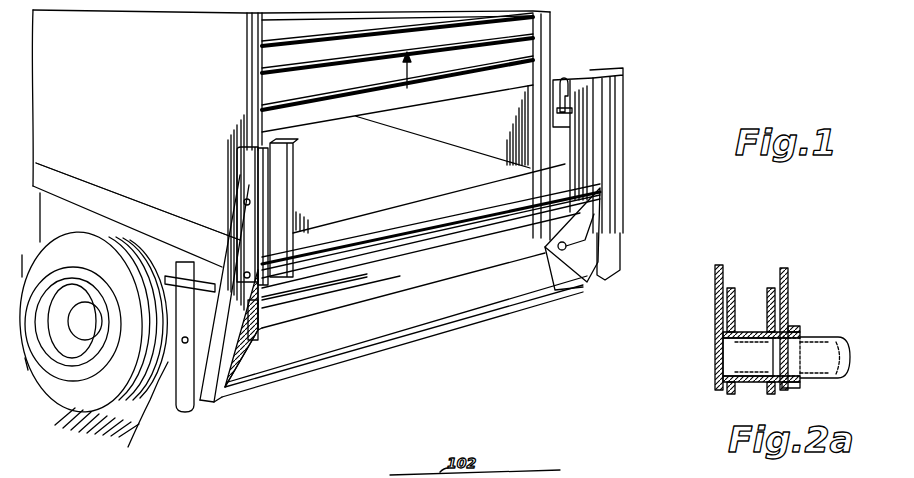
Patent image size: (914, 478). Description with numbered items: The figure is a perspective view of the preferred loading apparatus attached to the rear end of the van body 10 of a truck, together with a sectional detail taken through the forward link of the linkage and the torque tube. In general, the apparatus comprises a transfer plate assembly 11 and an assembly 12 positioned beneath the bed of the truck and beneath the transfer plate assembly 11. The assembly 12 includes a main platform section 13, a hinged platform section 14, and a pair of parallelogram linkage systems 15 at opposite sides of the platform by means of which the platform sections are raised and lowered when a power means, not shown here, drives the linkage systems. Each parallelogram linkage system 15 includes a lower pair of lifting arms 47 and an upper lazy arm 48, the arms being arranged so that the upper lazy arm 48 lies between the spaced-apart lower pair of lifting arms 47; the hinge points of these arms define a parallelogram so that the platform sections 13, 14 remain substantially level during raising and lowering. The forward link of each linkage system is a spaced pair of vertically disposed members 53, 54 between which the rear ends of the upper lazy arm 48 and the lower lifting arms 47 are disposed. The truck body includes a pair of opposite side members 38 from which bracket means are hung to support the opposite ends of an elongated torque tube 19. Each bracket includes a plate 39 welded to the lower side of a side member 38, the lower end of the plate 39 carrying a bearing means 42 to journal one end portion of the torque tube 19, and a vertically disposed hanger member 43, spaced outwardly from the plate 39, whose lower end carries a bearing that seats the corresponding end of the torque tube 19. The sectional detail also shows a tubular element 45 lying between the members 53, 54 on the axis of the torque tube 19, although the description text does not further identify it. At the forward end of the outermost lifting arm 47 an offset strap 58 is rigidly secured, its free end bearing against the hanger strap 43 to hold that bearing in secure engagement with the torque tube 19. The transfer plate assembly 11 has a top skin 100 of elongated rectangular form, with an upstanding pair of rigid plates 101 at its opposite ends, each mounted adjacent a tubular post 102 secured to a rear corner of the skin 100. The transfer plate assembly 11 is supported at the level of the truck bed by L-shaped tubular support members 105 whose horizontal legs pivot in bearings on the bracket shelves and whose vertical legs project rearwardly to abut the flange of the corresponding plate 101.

In FIG. 1, the van body 10 is at (174, 84).
In FIG. 1, the transfer plate assembly 11 is at (387, 226).
In FIG. 1, the assembly 12 is at (500, 328).
In FIG. 1, the main platform section 13 is at (403, 290).
In FIG. 1, the hinged platform section 14 is at (404, 336).
In FIG. 1, the parallelogram linkage systems 15 is at (608, 270).
In FIG. 2A, the torque tube 19 is at (820, 338).
In FIG. 1, the side members 38 is at (138, 204).
In FIG. 1, the plate 39 is at (145, 360).
In FIG. 2A, the bearing means 42 is at (794, 330).
In FIG. 1, the hanger member 43 is at (180, 385).
In FIG. 2A, the cross tube 45 is at (761, 357).
In FIG. 1, the lifting arms 47 is at (246, 359).
In FIG. 2A, the lifting arms 47 is at (767, 304).
In FIG. 1, the upper lazy arm 48 is at (255, 333).
In FIG. 1, the vertically disposed member 53 is at (238, 183).
In FIG. 2A, the vertically disposed member 53 is at (722, 268).
In FIG. 1, the vertically disposed member 54 is at (252, 147).
In FIG. 2A, the vertically disposed member 54 is at (789, 278).
In FIG. 1, the strap 58 is at (222, 396).
In FIG. 1, the top skin 100 is at (431, 246).
In FIG. 1, the rigid plates 101 is at (560, 140).
In FIG. 1, the tubular post 102 is at (295, 161).
In FIG. 1, the support member 105 is at (232, 221).